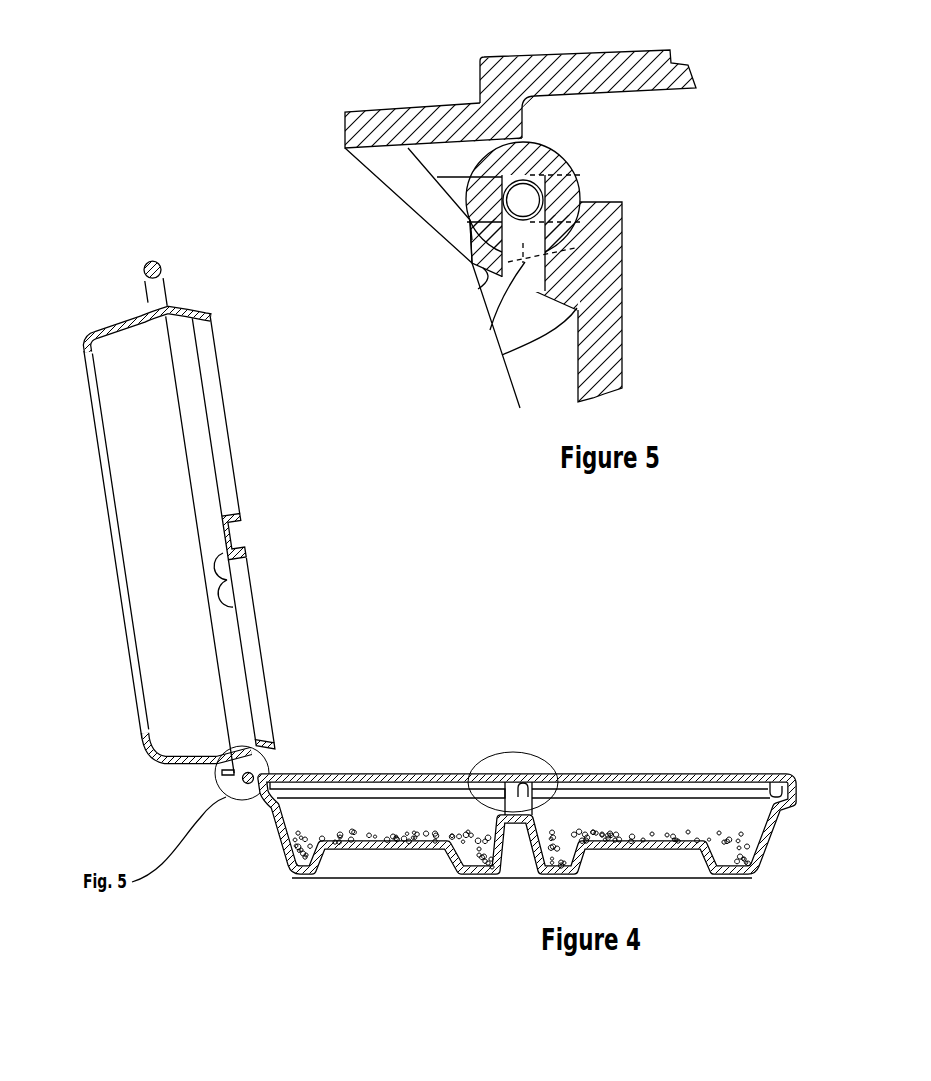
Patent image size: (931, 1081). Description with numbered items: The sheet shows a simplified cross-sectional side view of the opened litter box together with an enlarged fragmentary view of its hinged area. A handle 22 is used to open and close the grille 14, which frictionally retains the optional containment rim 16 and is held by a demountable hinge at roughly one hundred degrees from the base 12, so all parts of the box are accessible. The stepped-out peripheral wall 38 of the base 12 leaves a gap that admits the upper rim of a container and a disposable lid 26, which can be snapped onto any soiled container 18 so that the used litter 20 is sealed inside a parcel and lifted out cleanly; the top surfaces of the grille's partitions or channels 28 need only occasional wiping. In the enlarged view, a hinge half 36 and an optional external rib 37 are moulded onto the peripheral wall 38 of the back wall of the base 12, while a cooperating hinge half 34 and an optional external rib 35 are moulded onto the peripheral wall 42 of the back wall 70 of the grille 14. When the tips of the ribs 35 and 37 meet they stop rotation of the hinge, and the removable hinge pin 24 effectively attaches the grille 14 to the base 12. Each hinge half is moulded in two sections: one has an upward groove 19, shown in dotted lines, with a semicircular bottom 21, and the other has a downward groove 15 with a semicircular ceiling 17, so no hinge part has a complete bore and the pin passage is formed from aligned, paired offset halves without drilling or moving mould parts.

In FIG. 4, the base 12 is at (775, 838).
In FIG. 4, the grille 14 is at (243, 427).
In FIG. 5, the downward groove 15 is at (489, 313).
In FIG. 4, the containment rim 16 is at (113, 306).
In FIG. 5, the semi circular ceiling 17 is at (546, 181).
In FIG. 4, the soiled container 18 is at (510, 752).
In FIG. 5, the upward groove 19 is at (527, 158).
In FIG. 4, the used litter 20 is at (566, 824).
In FIG. 5, the semi circular bottom 21 is at (552, 247).
In FIG. 4, the handle 22 is at (151, 261).
In FIG. 5, the hinge pin 24 is at (524, 195).
In FIG. 4, the hinge pin 24 is at (236, 778).
In FIG. 4, the disposable lid 26 is at (692, 786).
In FIG. 4, the partitions or channels 28 is at (218, 586).
In FIG. 5, the hinge half 34 is at (438, 157).
In FIG. 5, the external rib 35 is at (469, 251).
In FIG. 5, the hinge half 36 is at (503, 355).
In FIG. 5, the external rib 37 is at (489, 281).
In FIG. 5, the peripheral wall 38 is at (617, 225).
In FIG. 4, the peripheral wall 38 is at (770, 778).
In FIG. 5, the peripheral wall 42 is at (362, 131).
In FIG. 5, the back wall 70 is at (560, 74).